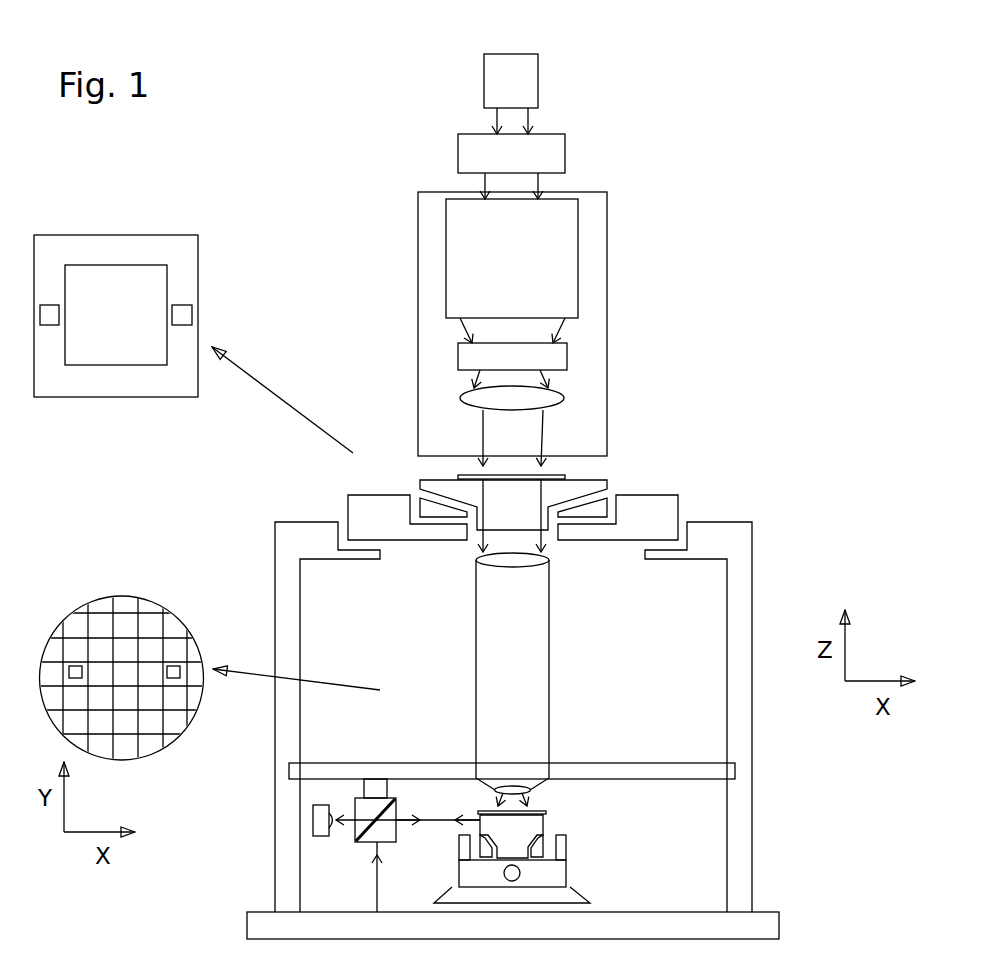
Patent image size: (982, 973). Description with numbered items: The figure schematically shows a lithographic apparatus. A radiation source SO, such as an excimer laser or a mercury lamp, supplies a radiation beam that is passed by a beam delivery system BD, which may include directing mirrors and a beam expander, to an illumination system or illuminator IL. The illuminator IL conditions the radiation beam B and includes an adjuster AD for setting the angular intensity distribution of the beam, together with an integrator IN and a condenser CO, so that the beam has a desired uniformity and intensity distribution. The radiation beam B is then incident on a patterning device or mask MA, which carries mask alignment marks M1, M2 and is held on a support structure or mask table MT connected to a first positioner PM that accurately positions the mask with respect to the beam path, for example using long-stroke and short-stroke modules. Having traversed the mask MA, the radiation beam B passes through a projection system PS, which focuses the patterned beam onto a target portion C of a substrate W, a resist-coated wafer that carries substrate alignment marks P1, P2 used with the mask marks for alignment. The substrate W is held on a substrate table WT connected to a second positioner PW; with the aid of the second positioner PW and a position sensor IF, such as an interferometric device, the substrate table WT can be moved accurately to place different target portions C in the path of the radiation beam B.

The radiation source SO is at (538, 85).
The beam delivery system BD is at (565, 160).
The illumination system (illuminator) IL is at (607, 215).
The adjuster AD is at (578, 272).
The integrator IN is at (567, 353).
The condenser CO is at (565, 398).
The radiation beam B is at (515, 467).
The patterning device (mask) MA is at (458, 477).
The mask alignment mark M1 is at (183, 305).
The mask alignment mark M2 is at (47, 305).
The support structure (mask table) MT is at (610, 485).
The first positioner PM is at (347, 495).
The projection system PS is at (550, 652).
The substrate (wafer) W is at (477, 810).
The target portion C is at (126, 664).
The substrate alignment mark P1 is at (75, 666).
The substrate alignment mark P2 is at (173, 666).
The substrate table (wafer table) WT is at (543, 820).
The second positioner PW is at (567, 877).
The position sensor IF is at (346, 849).